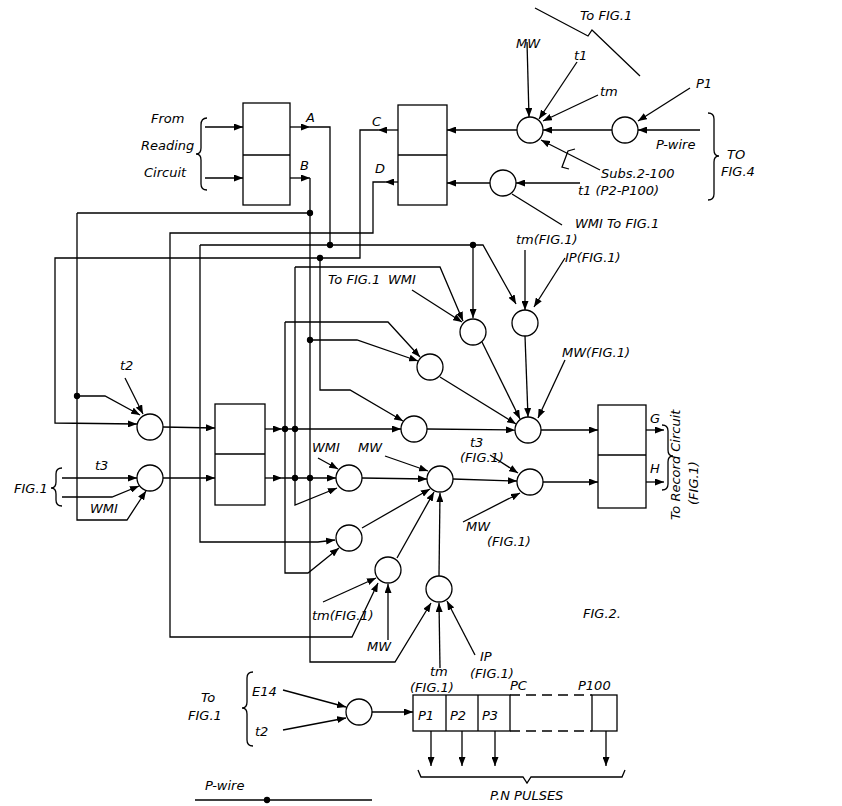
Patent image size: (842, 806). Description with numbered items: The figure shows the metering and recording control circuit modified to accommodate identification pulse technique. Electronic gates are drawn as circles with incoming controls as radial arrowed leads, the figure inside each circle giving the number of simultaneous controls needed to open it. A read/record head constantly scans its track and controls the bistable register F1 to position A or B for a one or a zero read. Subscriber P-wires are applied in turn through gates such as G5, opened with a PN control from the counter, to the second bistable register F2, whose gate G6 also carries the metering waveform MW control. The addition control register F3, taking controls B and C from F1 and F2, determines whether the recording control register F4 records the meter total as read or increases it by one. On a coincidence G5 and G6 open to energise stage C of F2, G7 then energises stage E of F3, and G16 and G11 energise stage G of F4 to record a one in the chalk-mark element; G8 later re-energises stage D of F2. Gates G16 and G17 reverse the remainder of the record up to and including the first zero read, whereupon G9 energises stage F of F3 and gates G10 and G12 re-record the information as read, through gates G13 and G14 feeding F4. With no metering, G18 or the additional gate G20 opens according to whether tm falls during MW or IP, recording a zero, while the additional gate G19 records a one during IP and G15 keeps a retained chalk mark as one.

The bistable register F1 is at (266, 144).
The second bistable register F2 is at (422, 145).
The addition control register F3 is at (240, 443).
The recording control register F4 is at (622, 446).
The gate G5 is at (625, 122).
The gate G6 is at (516, 128).
The gate G7 is at (164, 420).
The gate G8 is at (503, 177).
The gate G9 is at (163, 472).
The gate G10 is at (487, 336).
The gate G11 is at (545, 422).
The gate G12 is at (365, 481).
The gate G13 is at (438, 468).
The gate G14 is at (544, 474).
The gate G15 is at (416, 419).
The gate G16 is at (432, 357).
The gate G17 is at (350, 527).
The gate G18 is at (385, 560).
The additional gate G19 is at (459, 517).
The additional gate G20 is at (451, 585).